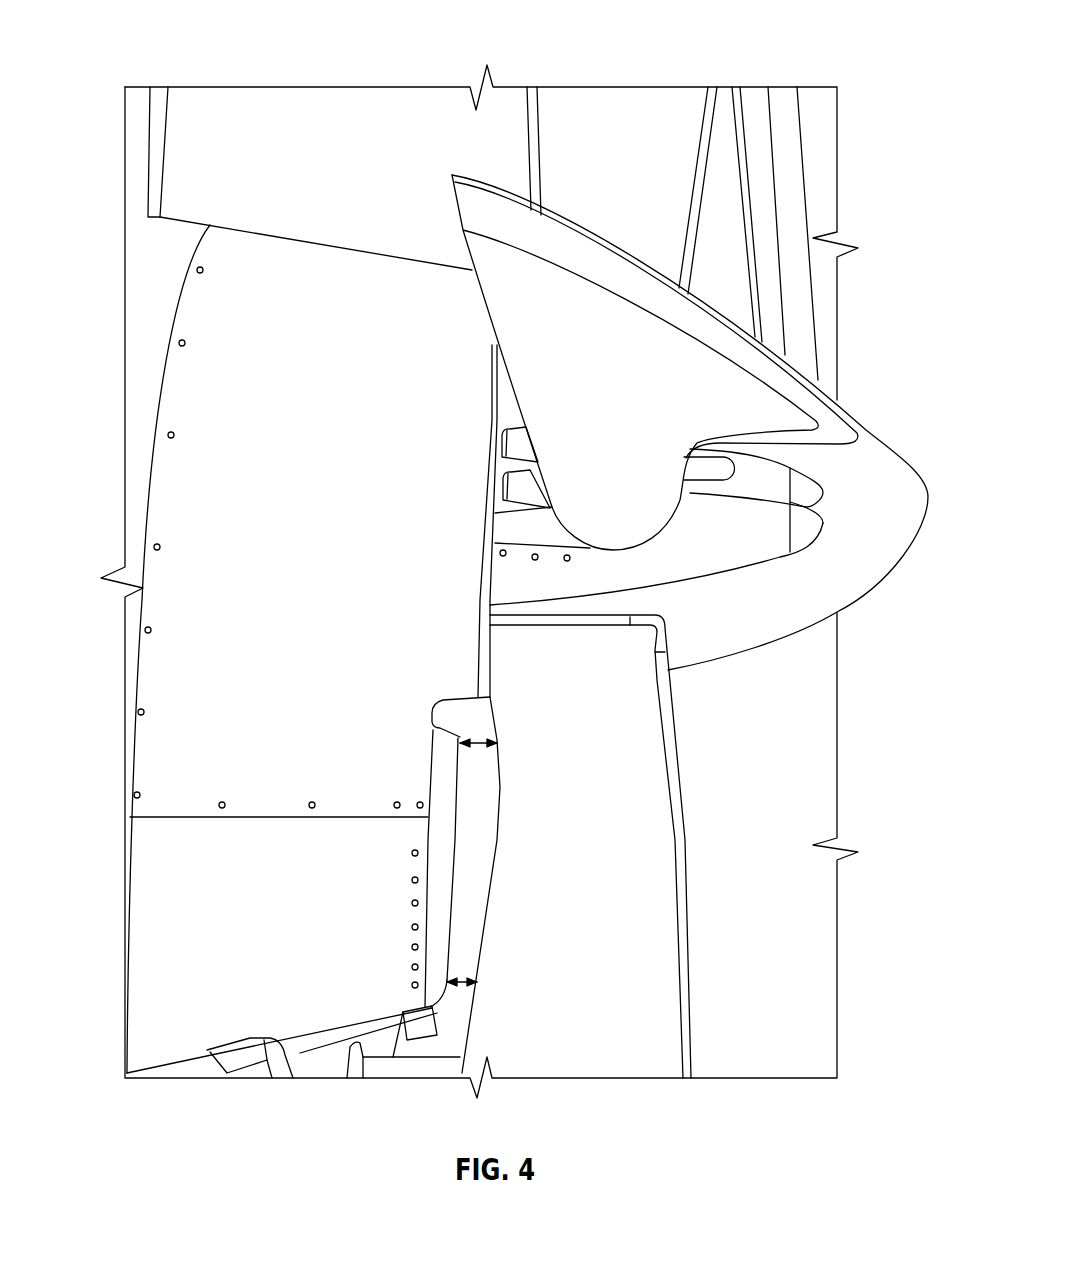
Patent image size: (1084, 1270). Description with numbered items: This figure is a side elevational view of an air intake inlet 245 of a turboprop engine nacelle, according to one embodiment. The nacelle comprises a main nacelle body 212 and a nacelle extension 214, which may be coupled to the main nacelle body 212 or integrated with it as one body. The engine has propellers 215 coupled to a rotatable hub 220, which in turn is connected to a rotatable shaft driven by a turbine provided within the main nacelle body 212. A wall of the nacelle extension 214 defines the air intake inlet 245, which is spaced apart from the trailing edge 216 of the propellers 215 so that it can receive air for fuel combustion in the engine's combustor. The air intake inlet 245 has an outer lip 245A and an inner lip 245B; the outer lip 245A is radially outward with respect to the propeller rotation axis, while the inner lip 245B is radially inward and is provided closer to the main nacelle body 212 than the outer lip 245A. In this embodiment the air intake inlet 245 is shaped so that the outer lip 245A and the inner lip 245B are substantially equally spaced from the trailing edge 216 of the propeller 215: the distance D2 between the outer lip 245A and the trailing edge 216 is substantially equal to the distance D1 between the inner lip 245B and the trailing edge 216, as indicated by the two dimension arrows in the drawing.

The main nacelle body 212 is at (343, 142).
The nacelle extension 214 is at (188, 950).
The propellers 215 is at (713, 118).
The trailing edge 216 is at (487, 903).
The rotatable hub 220 is at (845, 573).
The air intake inlet 245 is at (430, 1007).
The outer lip 245A is at (467, 1017).
The inner lip 245B is at (443, 715).
The distance D1 is at (478, 740).
The distance D2 is at (465, 978).